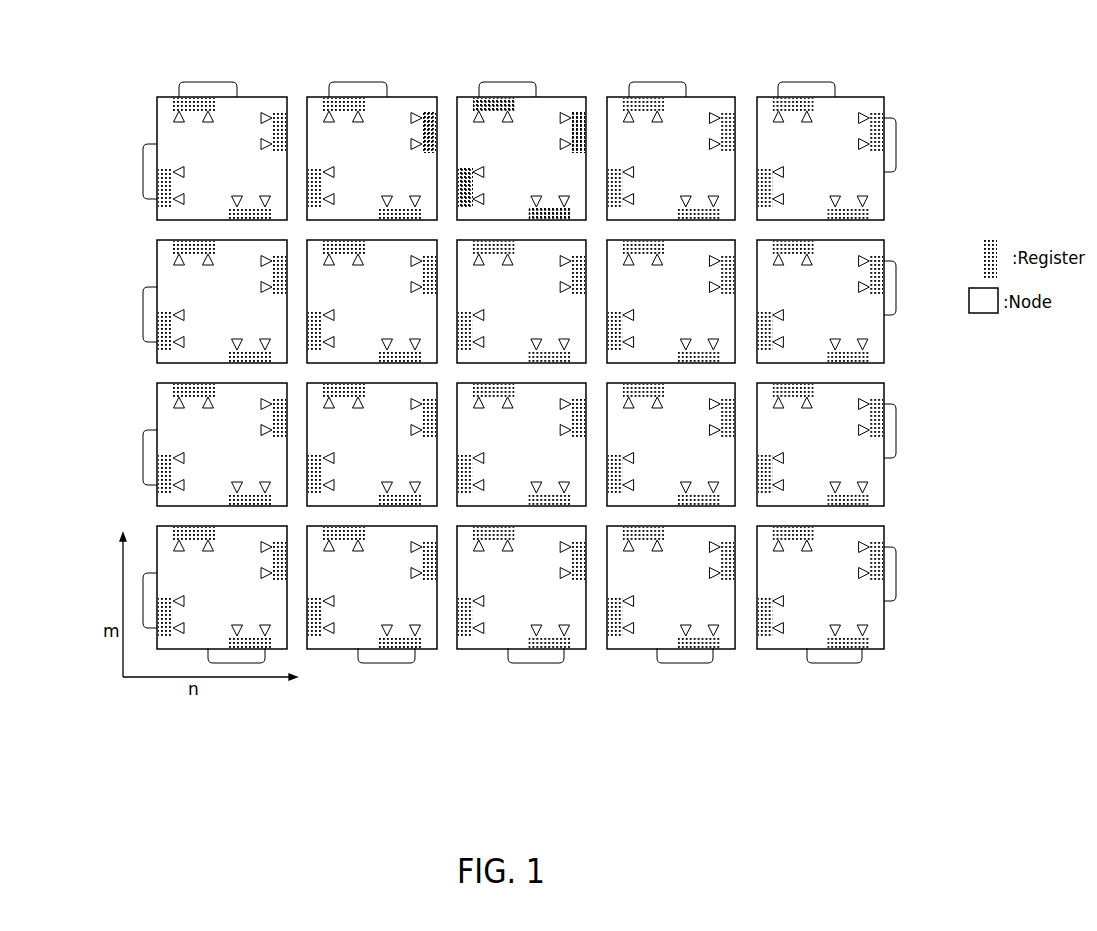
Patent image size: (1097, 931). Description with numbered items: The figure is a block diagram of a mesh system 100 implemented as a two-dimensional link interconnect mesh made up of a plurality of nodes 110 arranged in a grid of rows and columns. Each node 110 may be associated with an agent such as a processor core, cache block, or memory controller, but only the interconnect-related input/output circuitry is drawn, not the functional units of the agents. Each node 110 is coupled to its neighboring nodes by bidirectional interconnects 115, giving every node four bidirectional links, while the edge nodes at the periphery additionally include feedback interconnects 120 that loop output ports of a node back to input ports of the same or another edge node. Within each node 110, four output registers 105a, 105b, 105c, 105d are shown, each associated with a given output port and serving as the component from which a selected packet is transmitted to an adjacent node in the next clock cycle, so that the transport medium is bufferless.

The system 100 is at (88, 31).
The output register 105a is at (511, 111).
The output register 105b is at (568, 113).
The output register 105c is at (543, 220).
The output register 105d is at (457, 195).
The node 110 is at (903, 662).
The interconnect 115 is at (438, 141).
The feedback interconnect 120 is at (378, 83).